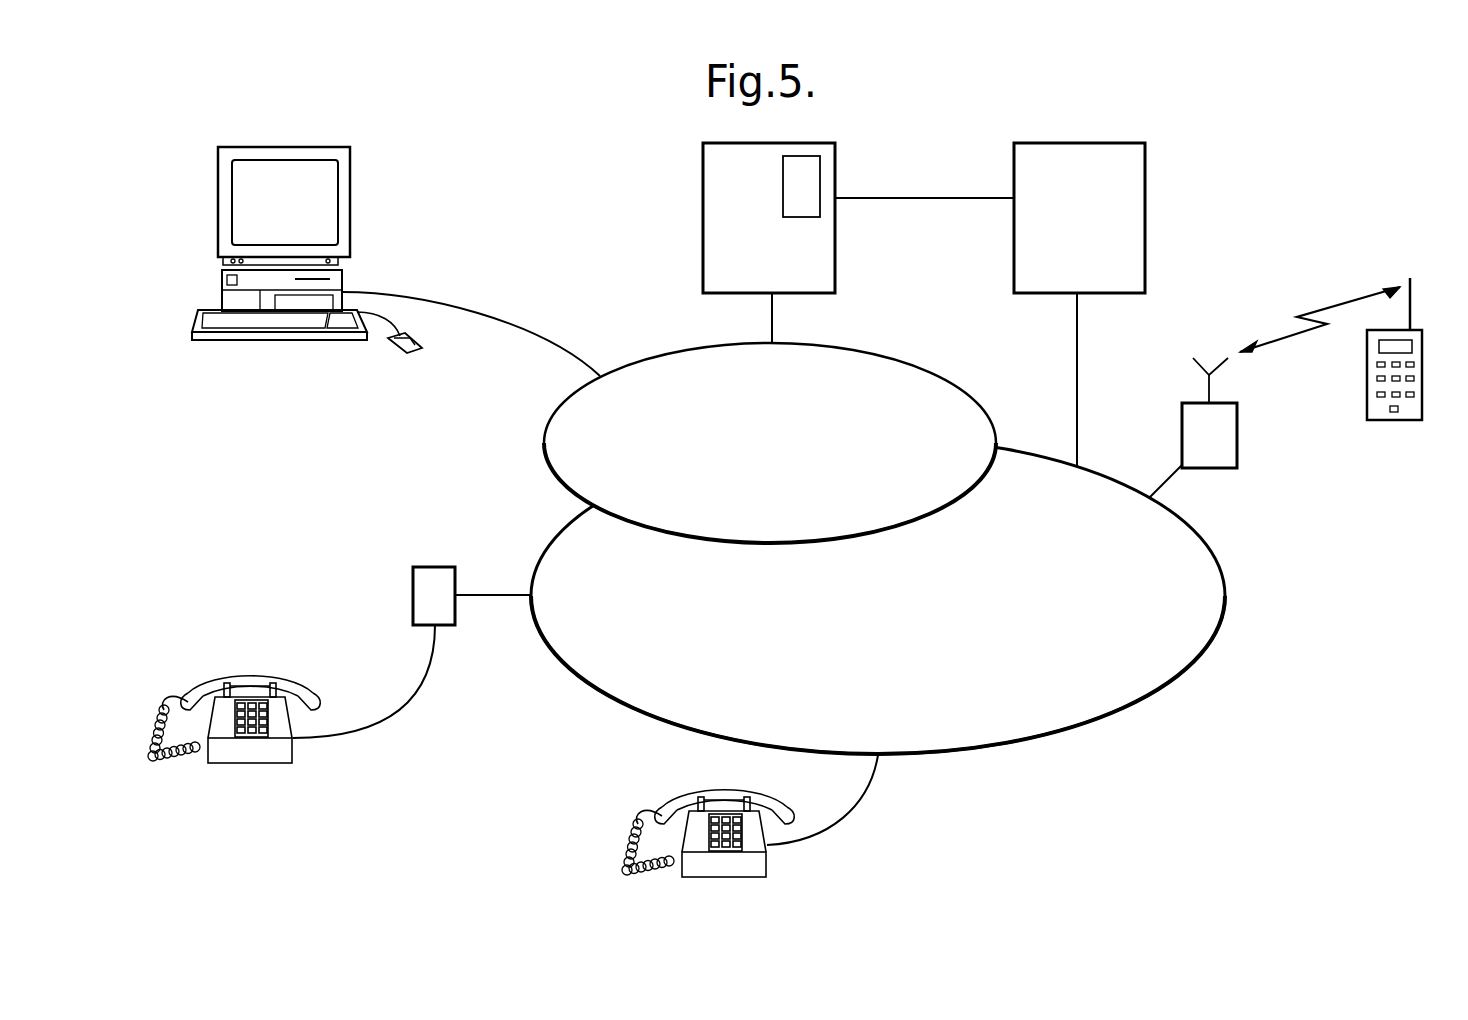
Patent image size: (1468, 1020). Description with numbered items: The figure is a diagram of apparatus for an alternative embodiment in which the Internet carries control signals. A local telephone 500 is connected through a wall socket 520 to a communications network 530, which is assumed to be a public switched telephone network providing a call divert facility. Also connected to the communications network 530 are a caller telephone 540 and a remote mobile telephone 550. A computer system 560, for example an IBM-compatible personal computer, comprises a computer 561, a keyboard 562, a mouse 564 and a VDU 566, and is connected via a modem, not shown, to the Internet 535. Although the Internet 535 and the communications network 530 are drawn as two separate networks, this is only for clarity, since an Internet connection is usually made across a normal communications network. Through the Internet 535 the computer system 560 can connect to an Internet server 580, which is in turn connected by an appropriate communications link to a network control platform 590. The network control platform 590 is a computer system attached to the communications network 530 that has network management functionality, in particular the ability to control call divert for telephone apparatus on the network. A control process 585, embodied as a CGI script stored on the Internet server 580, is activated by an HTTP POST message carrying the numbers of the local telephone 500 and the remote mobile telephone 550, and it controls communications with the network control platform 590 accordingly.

The local telephone 500 is at (248, 763).
The wall socket 520 is at (413, 590).
The communications network 530 is at (1111, 711).
The Internet 535 is at (546, 430).
The caller telephone 540 is at (722, 877).
The remote mobile telephone 550 is at (1395, 420).
The computer system 560 is at (405, 192).
The computer 561 is at (222, 293).
The keyboard 562 is at (265, 342).
The mouse 564 is at (413, 353).
The VDU 566 is at (295, 147).
The Internet server 580 is at (703, 188).
The control process 585 is at (820, 182).
The network control platform 590 is at (1145, 182).